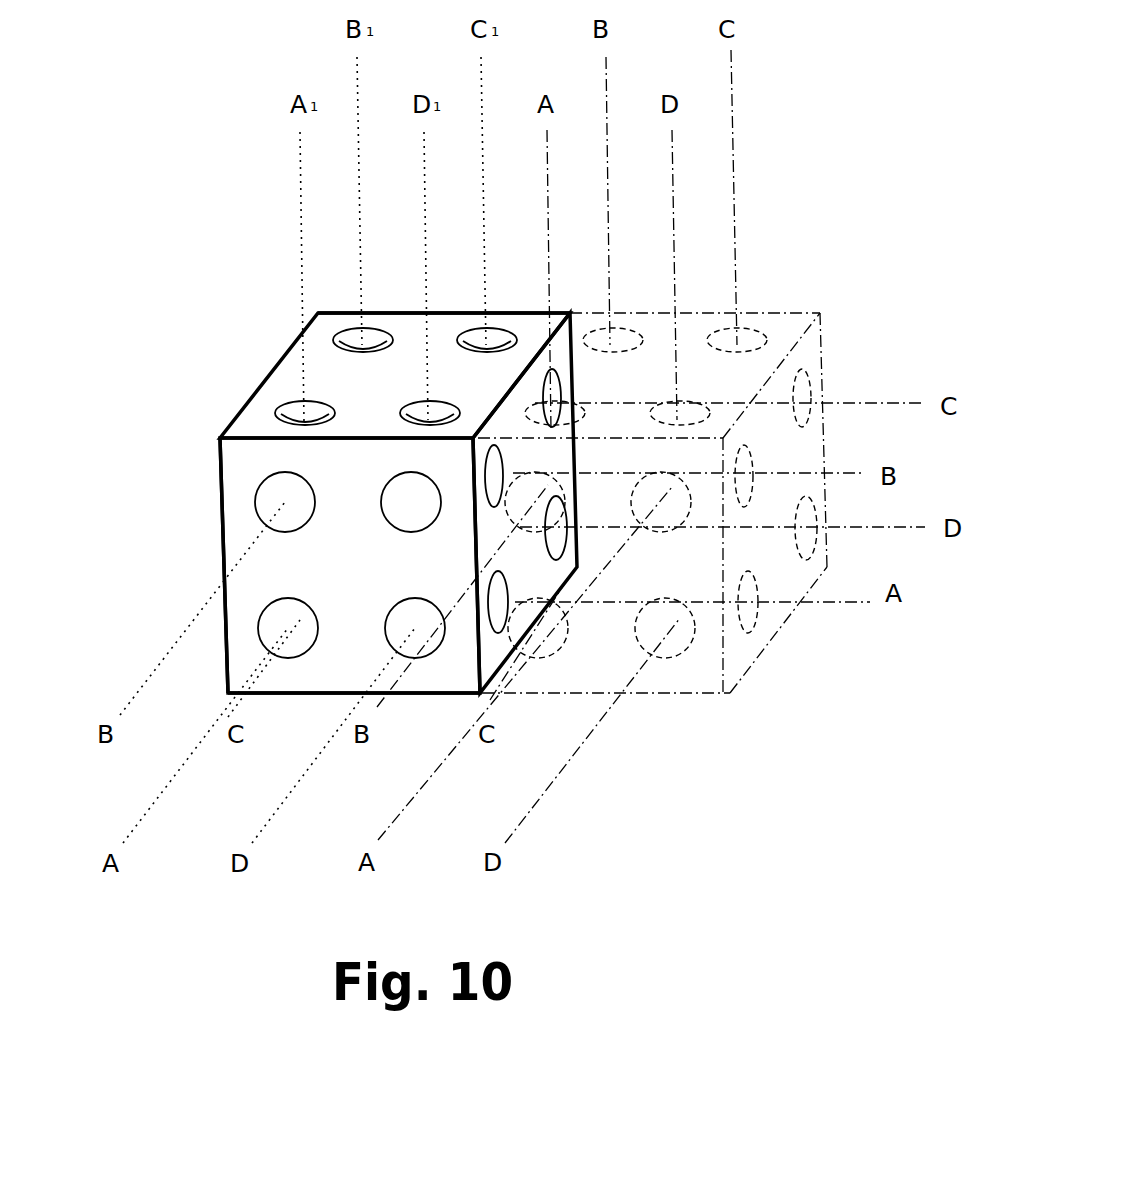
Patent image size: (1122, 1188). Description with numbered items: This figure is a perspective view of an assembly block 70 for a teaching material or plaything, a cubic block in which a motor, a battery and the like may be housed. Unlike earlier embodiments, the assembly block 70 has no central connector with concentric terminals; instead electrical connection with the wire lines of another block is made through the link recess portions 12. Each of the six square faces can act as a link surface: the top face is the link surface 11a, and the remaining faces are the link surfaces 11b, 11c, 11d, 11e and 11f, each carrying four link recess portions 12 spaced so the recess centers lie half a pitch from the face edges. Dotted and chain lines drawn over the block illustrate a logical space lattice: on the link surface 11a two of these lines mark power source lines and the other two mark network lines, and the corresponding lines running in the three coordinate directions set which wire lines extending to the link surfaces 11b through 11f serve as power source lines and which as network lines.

The assembly block 70 is at (238, 302).
The link surface 11a is at (367, 382).
The link surface 11b is at (320, 558).
The link surface 11c is at (542, 577).
The link surface 11d is at (450, 657).
The link surface 11e is at (220, 540).
The link surface 11f is at (548, 458).
The link recess portion 12 is at (375, 320).